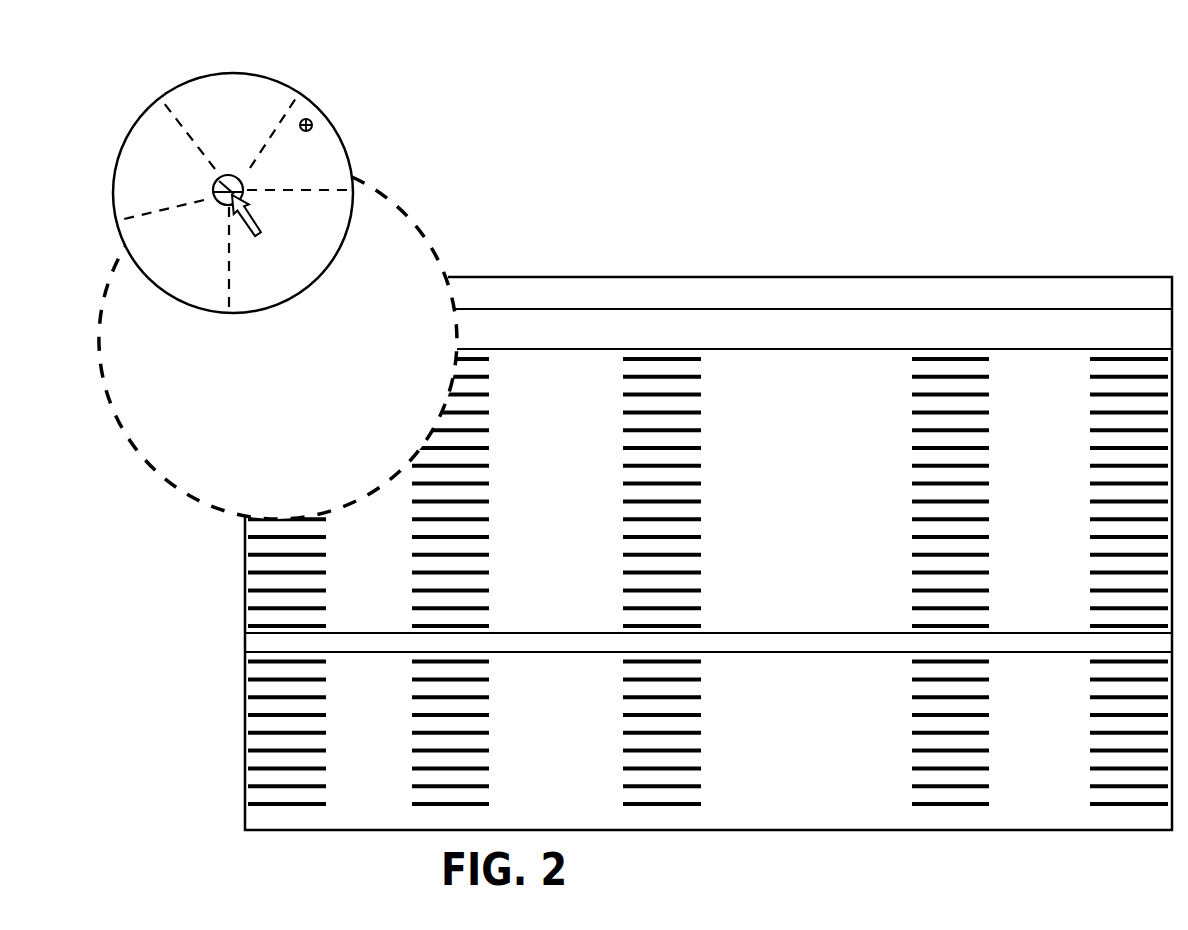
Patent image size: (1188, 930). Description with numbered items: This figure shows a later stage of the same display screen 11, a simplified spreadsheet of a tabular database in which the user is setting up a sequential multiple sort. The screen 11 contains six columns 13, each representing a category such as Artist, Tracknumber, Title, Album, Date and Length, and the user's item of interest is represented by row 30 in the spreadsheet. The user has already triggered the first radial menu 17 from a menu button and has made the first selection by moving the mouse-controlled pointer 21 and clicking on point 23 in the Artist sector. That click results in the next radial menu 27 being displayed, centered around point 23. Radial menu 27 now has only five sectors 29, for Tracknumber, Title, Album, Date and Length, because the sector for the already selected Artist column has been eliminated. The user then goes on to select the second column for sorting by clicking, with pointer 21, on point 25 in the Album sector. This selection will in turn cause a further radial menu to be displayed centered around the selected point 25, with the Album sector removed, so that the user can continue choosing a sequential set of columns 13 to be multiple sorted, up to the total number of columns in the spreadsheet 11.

The display screen 11 is at (344, 694).
The columns 13 is at (322, 739).
The radial menu 17 is at (428, 240).
The pointer 21 is at (252, 218).
The point 23 is at (225, 174).
The point 25 is at (313, 125).
The radial menu 27 is at (229, 74).
The sectors 29 is at (236, 196).
The row 30 is at (593, 648).